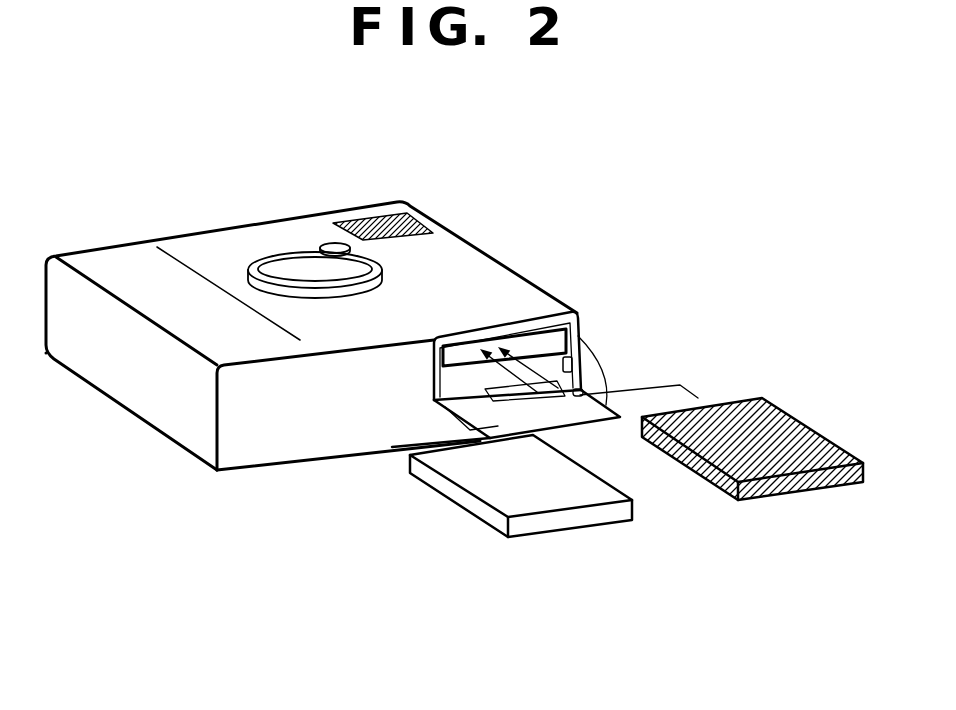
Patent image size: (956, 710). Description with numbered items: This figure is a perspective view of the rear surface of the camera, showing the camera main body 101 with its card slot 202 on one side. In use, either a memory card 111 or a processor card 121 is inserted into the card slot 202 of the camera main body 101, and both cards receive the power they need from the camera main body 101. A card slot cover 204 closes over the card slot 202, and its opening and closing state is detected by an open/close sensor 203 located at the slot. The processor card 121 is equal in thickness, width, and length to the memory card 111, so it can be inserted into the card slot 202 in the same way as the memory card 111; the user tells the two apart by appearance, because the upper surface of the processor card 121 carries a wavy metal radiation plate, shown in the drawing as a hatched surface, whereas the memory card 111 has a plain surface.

The camera main body 101 is at (365, 210).
The card slot 202 is at (519, 340).
The open/close sensor 203 is at (570, 367).
The card slot cover 204 is at (440, 403).
The memory card 111 is at (562, 500).
The processor card 121 is at (790, 465).